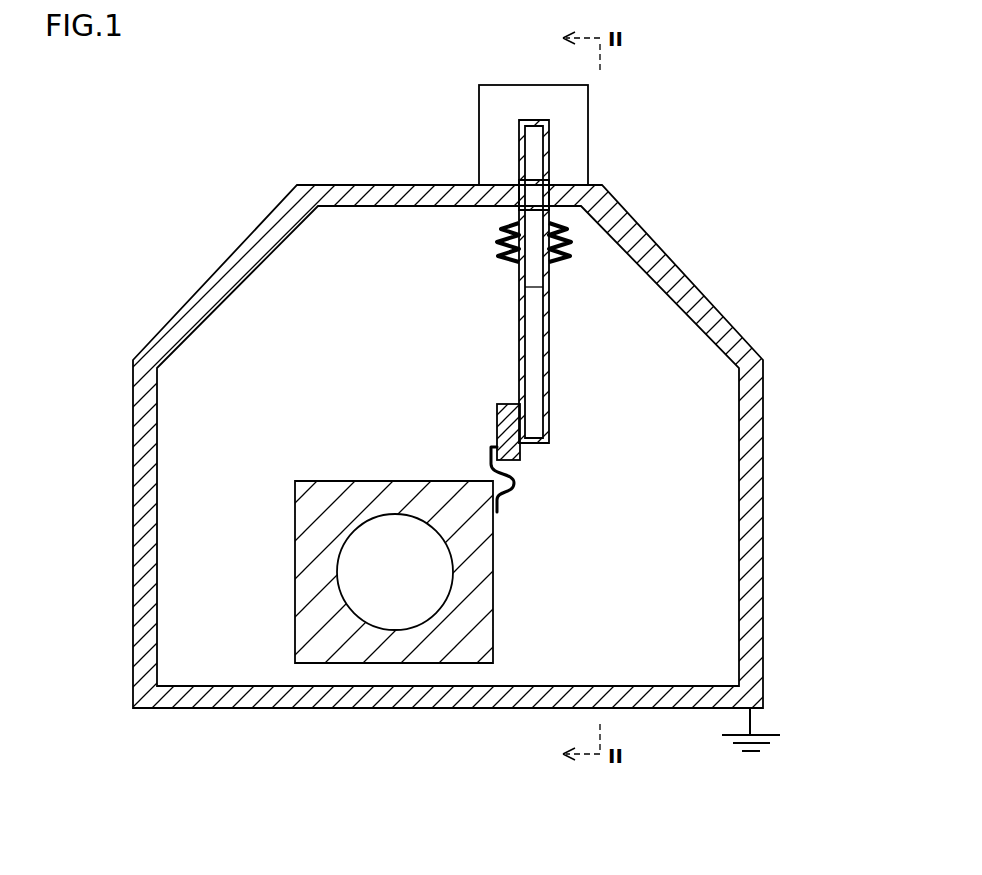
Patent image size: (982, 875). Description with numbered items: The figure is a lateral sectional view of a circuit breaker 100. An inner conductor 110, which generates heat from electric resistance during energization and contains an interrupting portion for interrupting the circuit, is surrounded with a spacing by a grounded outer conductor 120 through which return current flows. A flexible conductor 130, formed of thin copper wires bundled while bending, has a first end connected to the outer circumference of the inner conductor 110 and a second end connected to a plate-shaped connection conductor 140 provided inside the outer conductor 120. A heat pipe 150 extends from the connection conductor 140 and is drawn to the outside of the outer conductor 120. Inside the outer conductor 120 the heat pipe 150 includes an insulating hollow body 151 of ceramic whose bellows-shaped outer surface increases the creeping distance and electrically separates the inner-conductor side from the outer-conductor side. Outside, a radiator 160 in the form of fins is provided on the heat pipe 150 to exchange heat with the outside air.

The circuit breaker 100 is at (200, 146).
The inner conductor 110 is at (295, 543).
The outer conductor 120 is at (763, 622).
The flexible conductor 130 is at (516, 480).
The connection conductor 140 is at (497, 415).
The heat pipe 150 is at (549, 278).
The insulating hollow body 151 is at (497, 243).
The radiator 160 is at (512, 85).